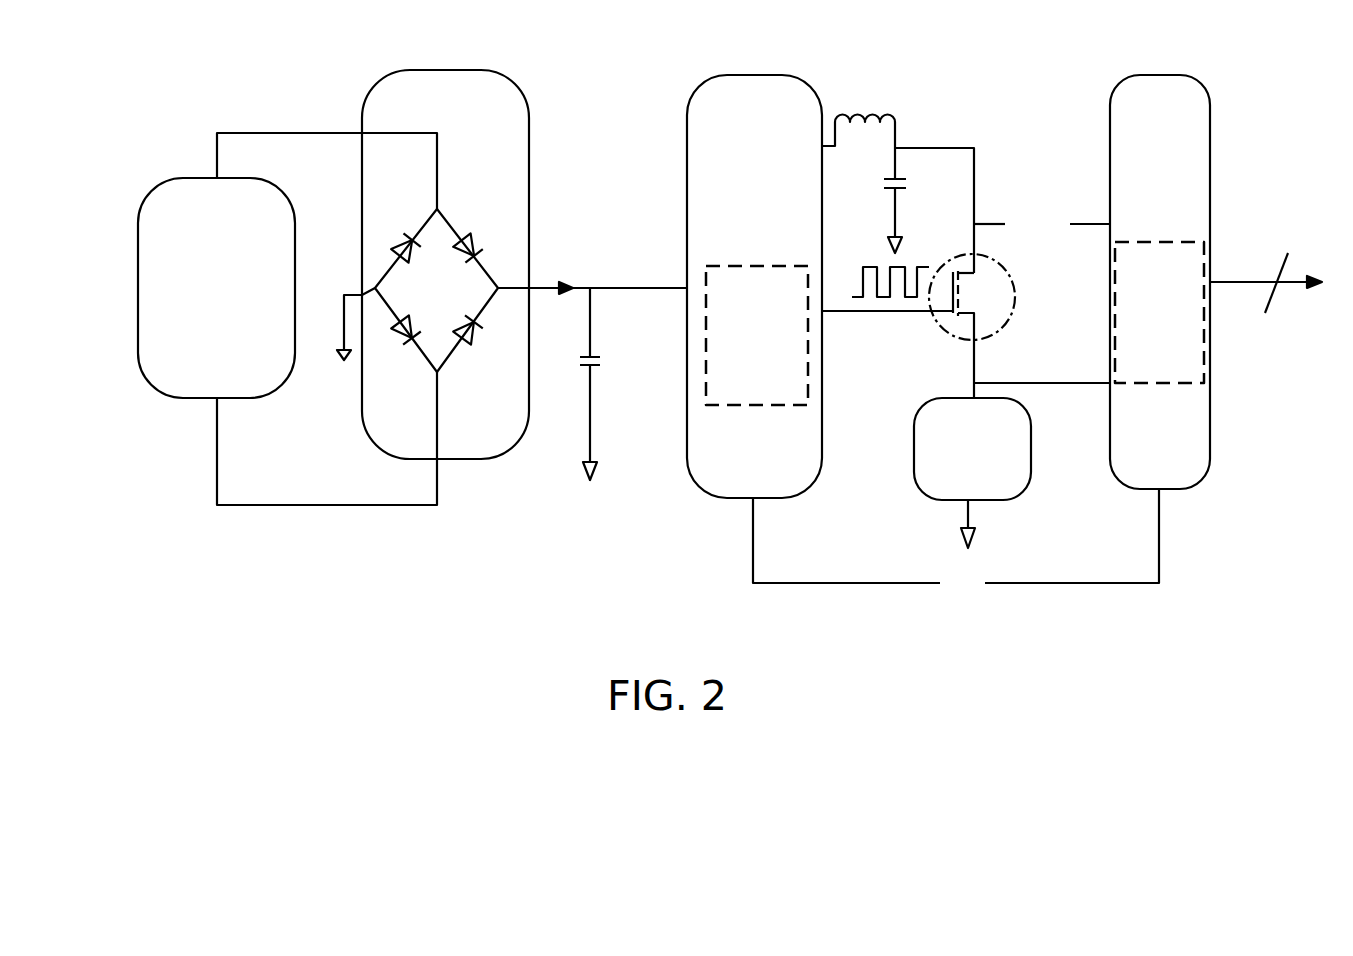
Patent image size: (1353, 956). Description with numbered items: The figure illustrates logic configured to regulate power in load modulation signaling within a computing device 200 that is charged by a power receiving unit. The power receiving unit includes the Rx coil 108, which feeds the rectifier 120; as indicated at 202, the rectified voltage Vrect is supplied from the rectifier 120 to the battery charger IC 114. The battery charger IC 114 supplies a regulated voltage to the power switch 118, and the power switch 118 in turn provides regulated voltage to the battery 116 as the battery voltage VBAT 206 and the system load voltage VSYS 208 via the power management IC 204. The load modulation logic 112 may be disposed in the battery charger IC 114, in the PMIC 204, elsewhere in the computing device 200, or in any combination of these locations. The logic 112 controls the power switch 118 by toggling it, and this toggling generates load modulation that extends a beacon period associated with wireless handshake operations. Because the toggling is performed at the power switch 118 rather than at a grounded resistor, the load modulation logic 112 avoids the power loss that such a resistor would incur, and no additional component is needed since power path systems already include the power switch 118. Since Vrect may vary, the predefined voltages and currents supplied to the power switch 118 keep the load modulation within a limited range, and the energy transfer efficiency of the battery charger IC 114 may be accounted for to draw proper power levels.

The Rx coil 108 is at (184, 178).
The load modulation logic 112 is at (775, 373).
The battery charger IC 114 is at (700, 85).
The battery 116 is at (938, 502).
The power switch 118 is at (1008, 270).
The rectifier 120 is at (462, 459).
The computing device 200 is at (690, 664).
The Vrect supply to battery charger IC 202 is at (605, 193).
The power management IC (PMIC) 204 is at (1193, 75).
The battery voltage (VBAT) 206 is at (930, 373).
The system load voltage (VSYS) 208 is at (1031, 167).